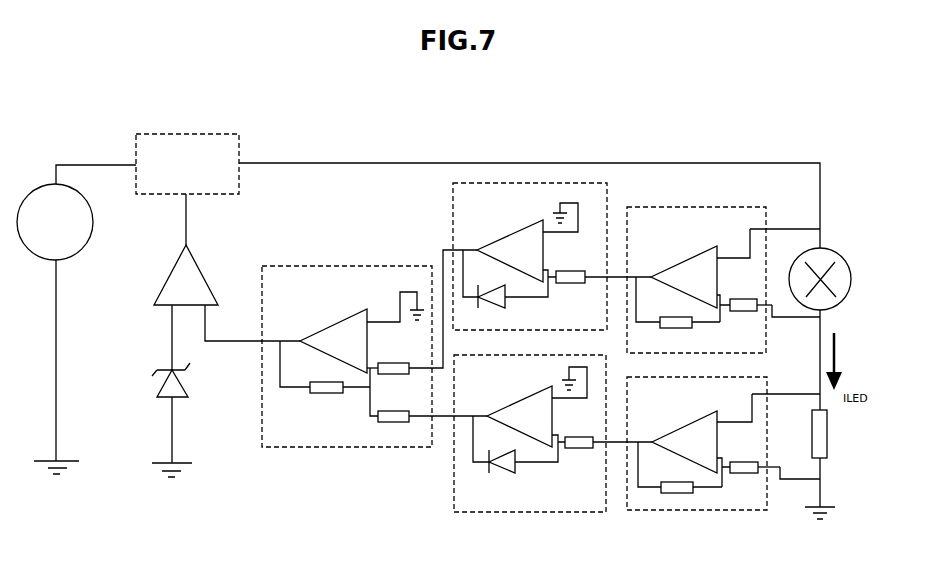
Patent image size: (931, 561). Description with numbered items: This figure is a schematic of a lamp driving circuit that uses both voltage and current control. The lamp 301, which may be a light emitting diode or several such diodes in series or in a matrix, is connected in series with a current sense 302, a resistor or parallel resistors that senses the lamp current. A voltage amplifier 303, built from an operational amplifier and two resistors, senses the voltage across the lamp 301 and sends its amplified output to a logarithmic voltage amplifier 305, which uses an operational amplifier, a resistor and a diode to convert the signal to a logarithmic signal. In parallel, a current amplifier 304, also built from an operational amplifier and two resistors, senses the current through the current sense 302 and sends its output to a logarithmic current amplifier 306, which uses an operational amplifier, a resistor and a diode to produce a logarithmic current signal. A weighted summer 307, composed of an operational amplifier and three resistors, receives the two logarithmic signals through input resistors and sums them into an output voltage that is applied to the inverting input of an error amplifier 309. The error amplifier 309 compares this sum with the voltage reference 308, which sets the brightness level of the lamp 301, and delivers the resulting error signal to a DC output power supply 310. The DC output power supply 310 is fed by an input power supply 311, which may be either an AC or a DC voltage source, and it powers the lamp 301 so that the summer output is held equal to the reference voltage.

The lamp 301 is at (835, 279).
The current sense 302 is at (823, 434).
The voltage amplifier 303 is at (702, 280).
The current amplifier 304 is at (703, 443).
The logarithmic voltage amplifier 305 is at (530, 256).
The logarithmic current amplifier 306 is at (530, 433).
The weighted summer 307 is at (347, 356).
The Vref 308 is at (171, 380).
The error amplifier 309 is at (195, 266).
The DC output power supply 310 is at (202, 164).
The input power supply 311 is at (70, 222).